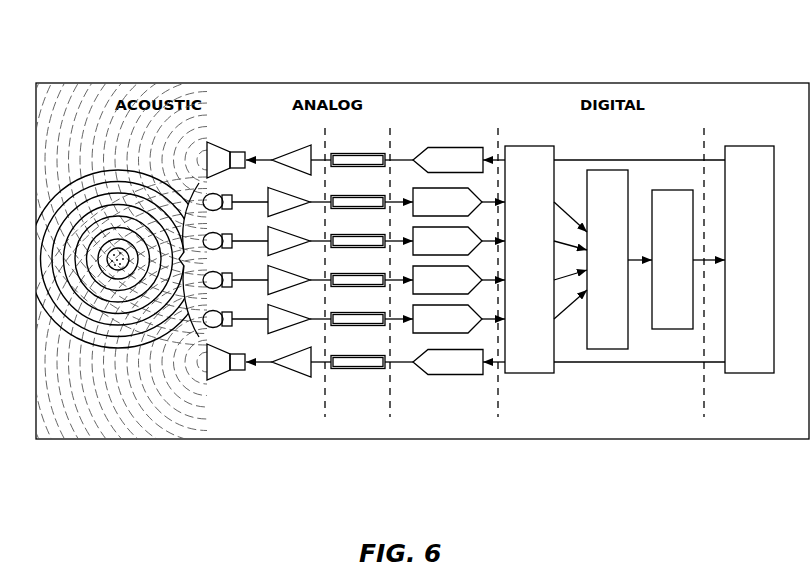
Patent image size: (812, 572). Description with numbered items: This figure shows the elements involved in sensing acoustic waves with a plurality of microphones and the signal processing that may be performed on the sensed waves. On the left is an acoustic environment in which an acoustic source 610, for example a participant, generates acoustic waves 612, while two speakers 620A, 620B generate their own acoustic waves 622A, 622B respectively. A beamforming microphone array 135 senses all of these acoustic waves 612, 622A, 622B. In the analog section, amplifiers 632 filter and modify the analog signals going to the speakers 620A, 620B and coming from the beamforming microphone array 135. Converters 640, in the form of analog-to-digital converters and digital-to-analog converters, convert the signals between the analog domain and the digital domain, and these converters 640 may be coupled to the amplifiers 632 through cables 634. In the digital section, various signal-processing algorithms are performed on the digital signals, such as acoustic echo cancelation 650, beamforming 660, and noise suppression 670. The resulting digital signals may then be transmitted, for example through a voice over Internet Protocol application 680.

The beamforming microphone array 135 is at (129, 259).
The acoustic source 610 is at (107, 259).
The acoustic waves 612 is at (75, 217).
The speaker 620A is at (220, 142).
The speaker 620B is at (221, 382).
The acoustic waves 622A is at (140, 147).
The acoustic waves 622B is at (68, 405).
The amplifiers 632 is at (278, 135).
The cables 634 is at (377, 118).
The converters 640 is at (433, 127).
The acoustic echo cancelation 650 is at (530, 146).
The beamforming 660 is at (606, 170).
The noise suppression 670 is at (675, 190).
The voice over Internet Protocol application 680 is at (752, 146).